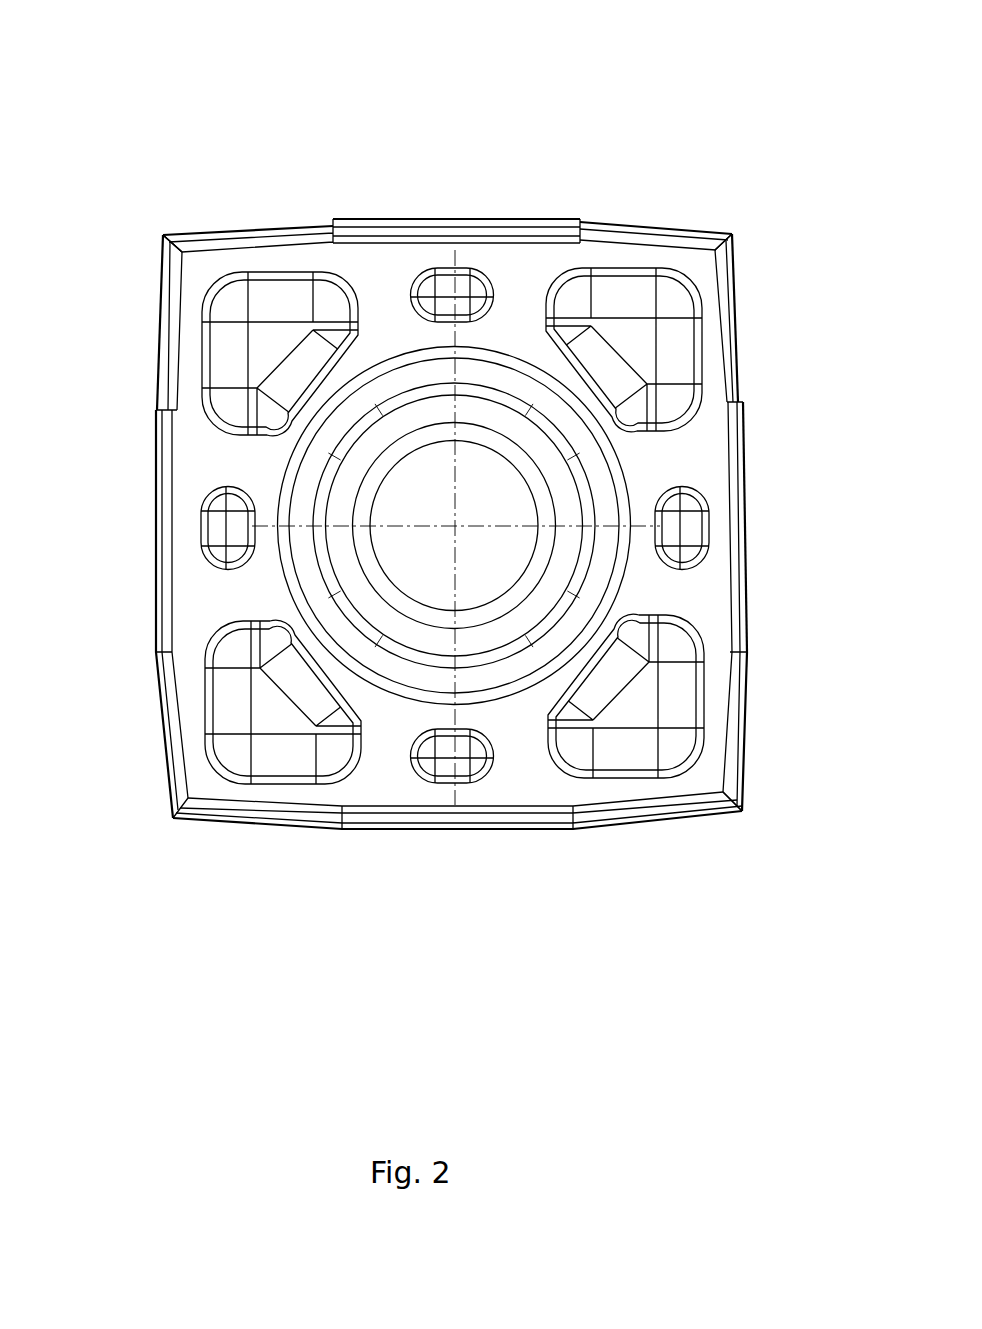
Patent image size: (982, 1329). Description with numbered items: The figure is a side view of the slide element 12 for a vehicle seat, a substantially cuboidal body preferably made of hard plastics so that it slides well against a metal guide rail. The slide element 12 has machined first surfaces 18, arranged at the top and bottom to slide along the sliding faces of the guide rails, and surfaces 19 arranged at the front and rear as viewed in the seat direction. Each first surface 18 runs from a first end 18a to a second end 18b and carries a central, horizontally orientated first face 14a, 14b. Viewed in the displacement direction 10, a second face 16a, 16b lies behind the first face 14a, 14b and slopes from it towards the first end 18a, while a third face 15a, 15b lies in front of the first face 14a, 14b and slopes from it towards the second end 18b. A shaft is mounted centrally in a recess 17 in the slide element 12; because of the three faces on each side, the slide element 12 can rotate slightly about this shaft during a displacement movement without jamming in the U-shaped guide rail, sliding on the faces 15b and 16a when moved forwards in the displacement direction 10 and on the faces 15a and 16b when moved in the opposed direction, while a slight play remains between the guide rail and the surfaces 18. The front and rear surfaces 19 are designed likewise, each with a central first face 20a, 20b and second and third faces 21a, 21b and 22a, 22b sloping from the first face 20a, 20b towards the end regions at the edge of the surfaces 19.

The displacement direction 10 is at (796, 660).
The slide element 12 is at (222, 100).
The first face 14a is at (155, 528).
The first face 14b is at (749, 497).
The third face 15a is at (161, 322).
The third face 15b is at (742, 332).
The second face 16a is at (158, 710).
The second face 16b is at (747, 706).
The recess 17 is at (408, 497).
The first surfaces 18 is at (105, 226).
The first end 18a is at (172, 818).
The second end 18b is at (163, 240).
The surfaces 19 is at (715, 123).
The first face 20a is at (465, 833).
The first face 20b is at (497, 219).
The second face 21a is at (258, 832).
The second face 21b is at (265, 220).
The third face 22a is at (638, 830).
The third face 22b is at (650, 220).